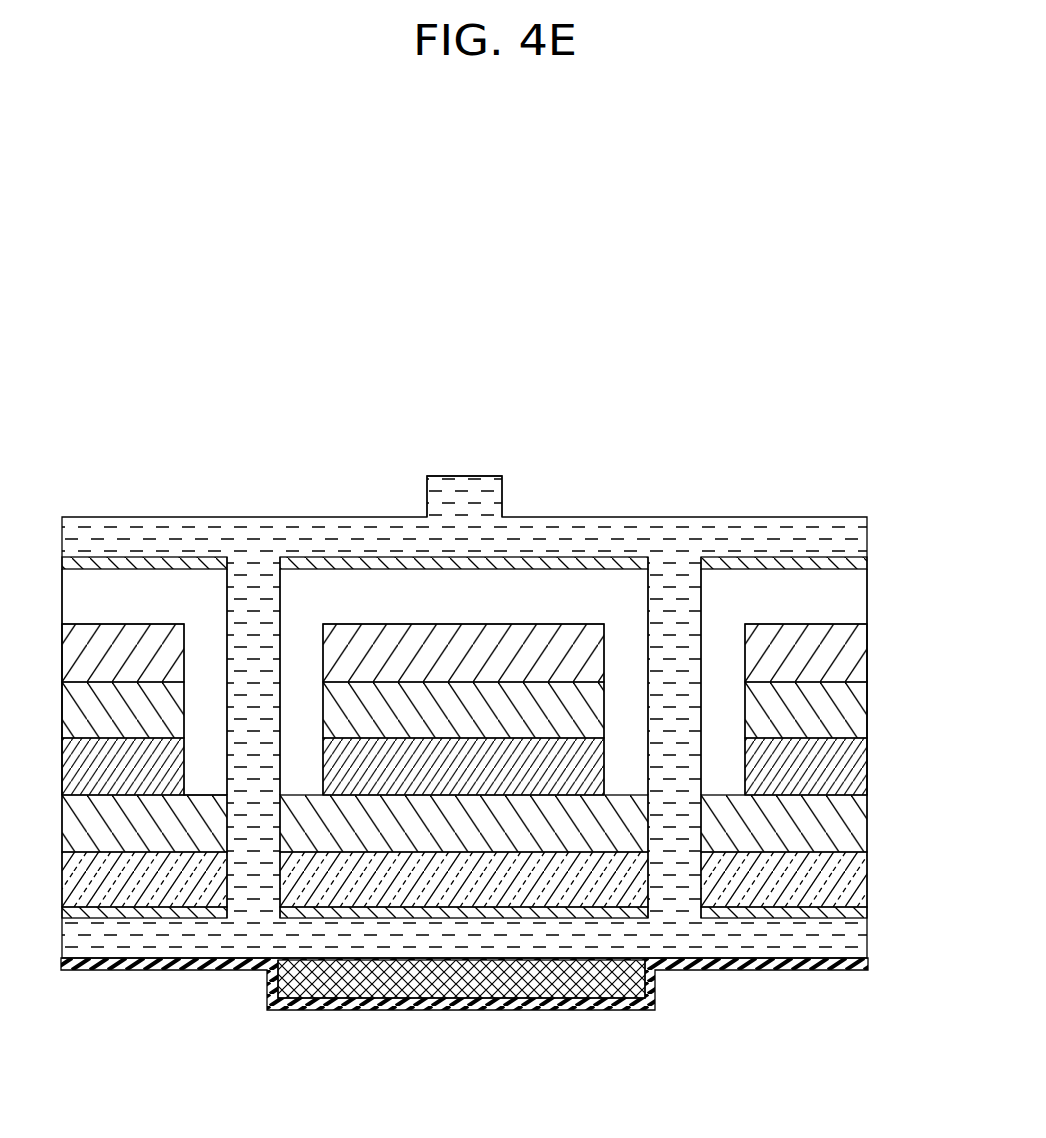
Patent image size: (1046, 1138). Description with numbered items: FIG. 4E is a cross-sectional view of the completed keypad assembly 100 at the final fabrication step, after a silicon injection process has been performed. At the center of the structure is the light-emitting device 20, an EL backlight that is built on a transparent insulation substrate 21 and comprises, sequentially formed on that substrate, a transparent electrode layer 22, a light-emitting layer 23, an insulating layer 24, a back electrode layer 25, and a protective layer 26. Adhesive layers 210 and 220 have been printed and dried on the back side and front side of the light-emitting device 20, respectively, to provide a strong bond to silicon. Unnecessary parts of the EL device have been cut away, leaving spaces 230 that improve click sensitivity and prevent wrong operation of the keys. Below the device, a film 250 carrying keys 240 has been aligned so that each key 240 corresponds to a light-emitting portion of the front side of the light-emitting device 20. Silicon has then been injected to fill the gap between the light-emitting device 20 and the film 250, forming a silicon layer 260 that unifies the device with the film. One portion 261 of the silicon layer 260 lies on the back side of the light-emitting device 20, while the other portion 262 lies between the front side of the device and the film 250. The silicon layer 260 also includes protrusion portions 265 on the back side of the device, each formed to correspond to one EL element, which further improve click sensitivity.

The semiconductor package 100 is at (796, 391).
The light-emitting device 20 is at (910, 582).
The transparent insulation substrate 21 is at (862, 872).
The transparent electrode layer 22 is at (862, 813).
The light-emitting layer 23 is at (862, 760).
The insulating layer 24 is at (862, 711).
The back electrode layer 25 is at (862, 647).
The protective layer 26 is at (862, 592).
The adhesive layer 210 is at (867, 557).
The adhesive layer 220 is at (867, 914).
The space 230 is at (695, 593).
The key 240 is at (477, 990).
The film 250 is at (752, 960).
The silicon layer 260 is at (738, 457).
The portion of the silicon layer 261 is at (749, 538).
The other portion of the silicon layer 262 is at (798, 938).
The protrusion portion 265 is at (473, 483).